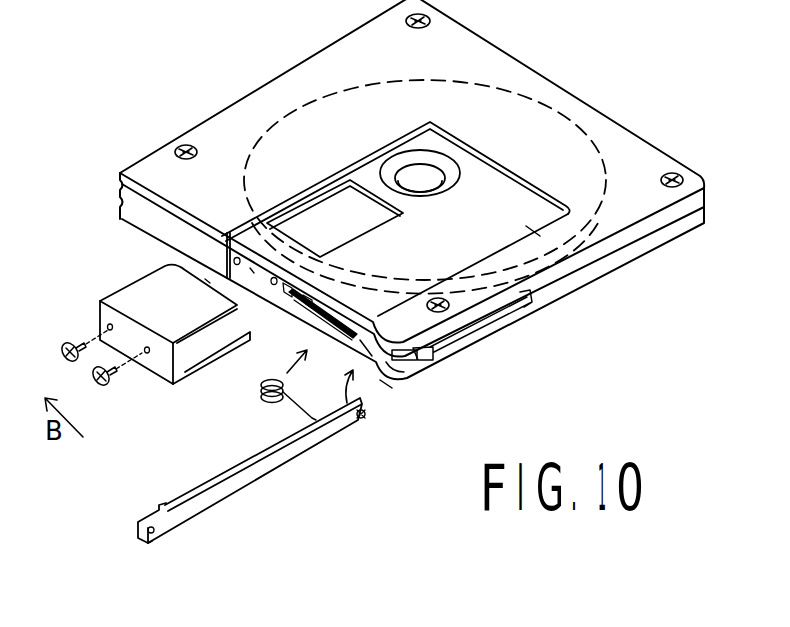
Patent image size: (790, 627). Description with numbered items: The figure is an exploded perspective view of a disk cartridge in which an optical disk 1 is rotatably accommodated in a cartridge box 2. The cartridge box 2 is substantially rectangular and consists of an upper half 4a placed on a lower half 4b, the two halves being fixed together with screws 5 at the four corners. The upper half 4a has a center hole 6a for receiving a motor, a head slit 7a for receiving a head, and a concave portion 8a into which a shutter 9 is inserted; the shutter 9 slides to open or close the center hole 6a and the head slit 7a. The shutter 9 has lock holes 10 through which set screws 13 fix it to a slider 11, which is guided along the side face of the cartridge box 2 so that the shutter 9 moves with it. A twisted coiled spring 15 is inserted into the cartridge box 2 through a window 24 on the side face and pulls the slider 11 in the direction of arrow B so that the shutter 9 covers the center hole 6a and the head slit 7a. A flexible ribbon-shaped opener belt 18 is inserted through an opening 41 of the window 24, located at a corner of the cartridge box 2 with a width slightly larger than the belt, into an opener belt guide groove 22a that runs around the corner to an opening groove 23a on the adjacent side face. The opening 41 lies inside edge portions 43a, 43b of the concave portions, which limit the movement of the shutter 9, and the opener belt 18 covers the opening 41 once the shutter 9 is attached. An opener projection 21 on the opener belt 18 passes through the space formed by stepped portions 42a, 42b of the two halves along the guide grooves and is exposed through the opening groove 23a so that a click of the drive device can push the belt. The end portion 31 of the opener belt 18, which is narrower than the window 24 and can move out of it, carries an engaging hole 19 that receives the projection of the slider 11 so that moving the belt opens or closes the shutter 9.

The optical disk 1 is at (395, 88).
The cartridge box 2 is at (463, 33).
The upper half 4a is at (602, 125).
The lower half 4b is at (658, 240).
The screws 5 is at (675, 170).
The center hole 6a is at (390, 150).
The head slit 7a is at (345, 183).
The concave portion 8a is at (500, 180).
The shutter 9 is at (137, 288).
The lock holes 10 is at (110, 327).
The slider 11 is at (227, 233).
The set screws 13 is at (105, 382).
The twisted coiled spring 15 is at (224, 364).
The opener belt 18 is at (295, 282).
The engaging hole 19 is at (168, 535).
The opener projection 21 is at (363, 419).
The opener belt guide groove 22a is at (480, 325).
The opening groove 23a is at (412, 370).
The window 24 is at (310, 317).
The end portion 31 is at (148, 513).
The opening 41 is at (320, 376).
The stepped portion 42a is at (393, 365).
The stepped portion 42b is at (387, 387).
The edge portion 43a is at (533, 230).
The edge portion 43b is at (368, 353).